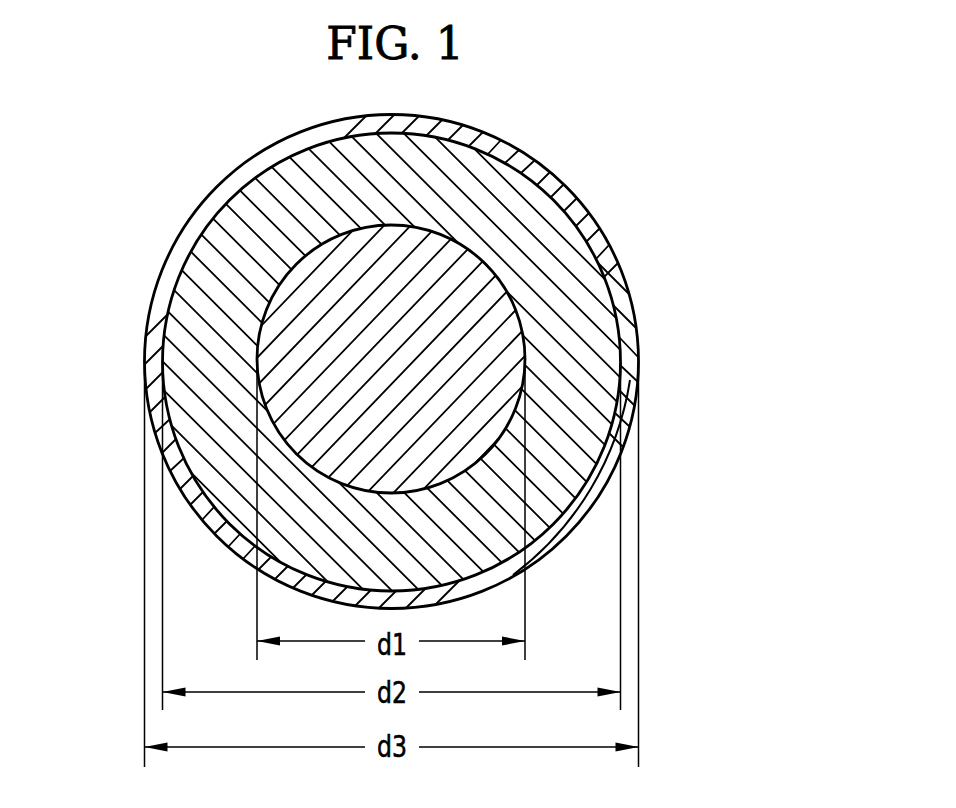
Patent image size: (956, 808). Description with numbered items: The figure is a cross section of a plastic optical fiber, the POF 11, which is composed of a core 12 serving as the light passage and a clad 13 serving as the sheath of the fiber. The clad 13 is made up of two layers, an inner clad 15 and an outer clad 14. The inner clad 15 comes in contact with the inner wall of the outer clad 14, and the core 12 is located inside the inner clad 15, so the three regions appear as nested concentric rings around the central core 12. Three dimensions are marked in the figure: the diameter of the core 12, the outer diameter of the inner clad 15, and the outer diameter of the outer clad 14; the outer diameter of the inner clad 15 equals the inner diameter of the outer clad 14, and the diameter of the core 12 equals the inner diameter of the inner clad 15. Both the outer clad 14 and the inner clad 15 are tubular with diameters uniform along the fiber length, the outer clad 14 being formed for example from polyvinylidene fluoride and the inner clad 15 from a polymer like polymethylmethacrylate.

The plastic optical fiber 11 is at (200, 185).
The core 12 is at (450, 278).
The clad 13 is at (73, 202).
The outer clad 14 is at (180, 253).
The inner clad 15 is at (217, 312).